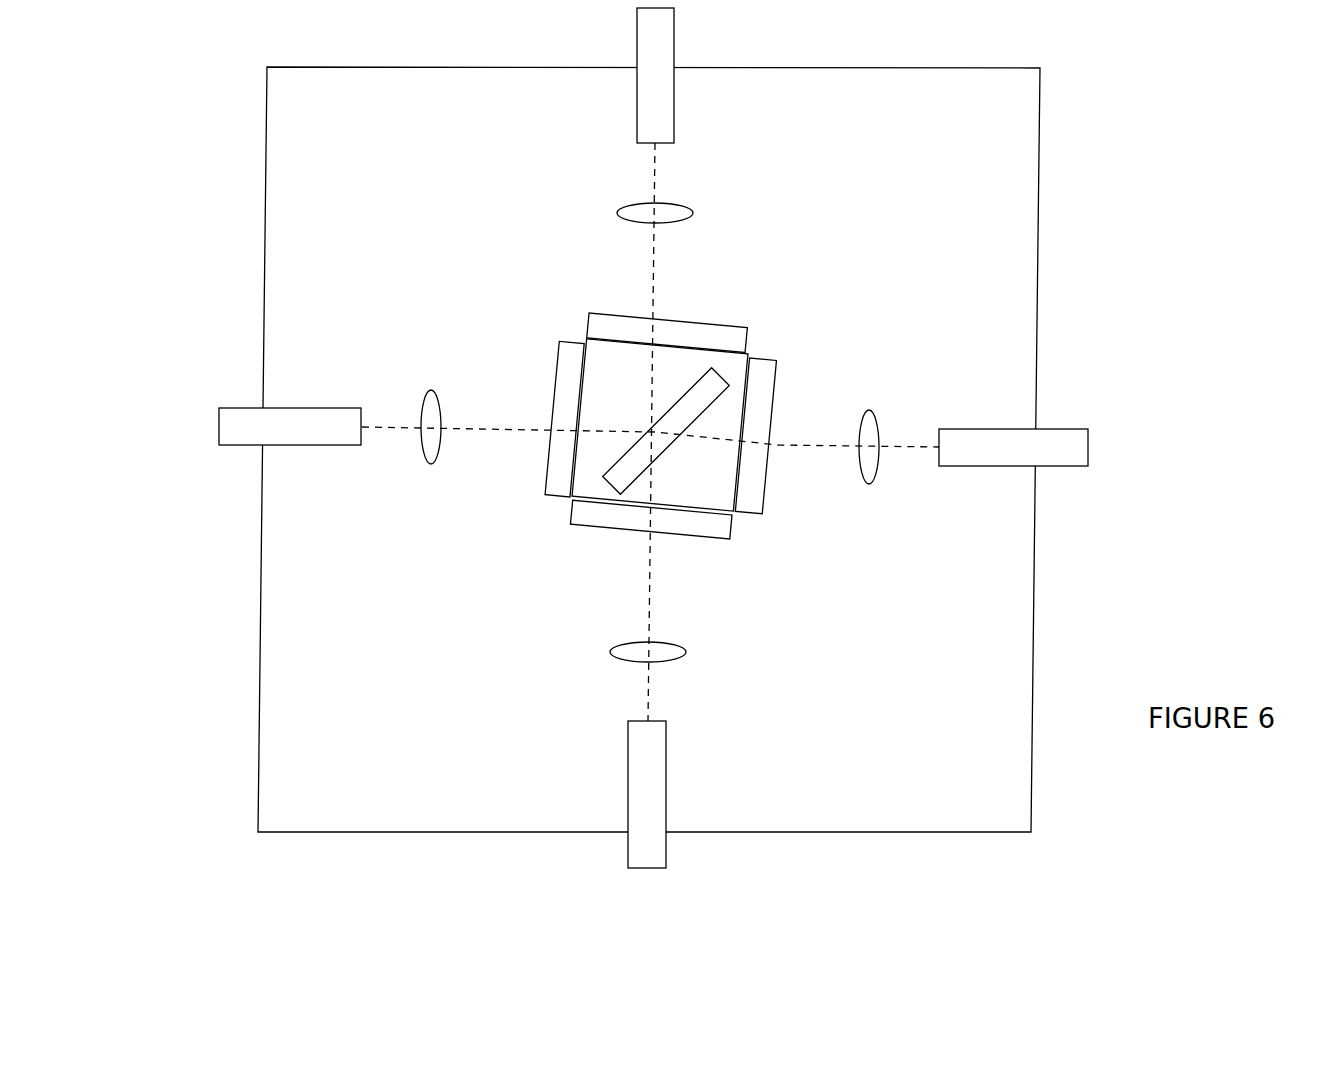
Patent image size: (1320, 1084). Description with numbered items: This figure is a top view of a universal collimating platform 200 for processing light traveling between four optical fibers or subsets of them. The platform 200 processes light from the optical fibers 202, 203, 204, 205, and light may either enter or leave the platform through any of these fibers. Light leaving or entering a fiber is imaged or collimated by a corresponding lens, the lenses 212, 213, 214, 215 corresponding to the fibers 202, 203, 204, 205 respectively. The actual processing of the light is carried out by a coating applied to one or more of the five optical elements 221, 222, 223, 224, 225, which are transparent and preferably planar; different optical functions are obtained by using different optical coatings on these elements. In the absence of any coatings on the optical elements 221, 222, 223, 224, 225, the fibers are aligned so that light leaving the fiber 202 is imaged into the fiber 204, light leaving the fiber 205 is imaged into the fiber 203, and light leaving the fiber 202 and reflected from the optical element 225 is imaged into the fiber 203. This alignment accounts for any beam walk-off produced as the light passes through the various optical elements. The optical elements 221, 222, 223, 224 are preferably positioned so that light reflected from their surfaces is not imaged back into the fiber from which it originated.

The universal collimating platform 200 is at (293, 149).
The optical fiber 202 is at (300, 420).
The optical fiber 203 is at (665, 72).
The optical fiber 204 is at (963, 443).
The optical fiber 205 is at (655, 820).
The lens 212 is at (422, 398).
The lens 213 is at (686, 217).
The lens 214 is at (865, 427).
The lens 215 is at (670, 648).
The optical element 221 is at (565, 380).
The optical element 222 is at (600, 522).
The optical element 223 is at (755, 498).
The optical element 224 is at (724, 338).
The optical element 225 is at (607, 476).